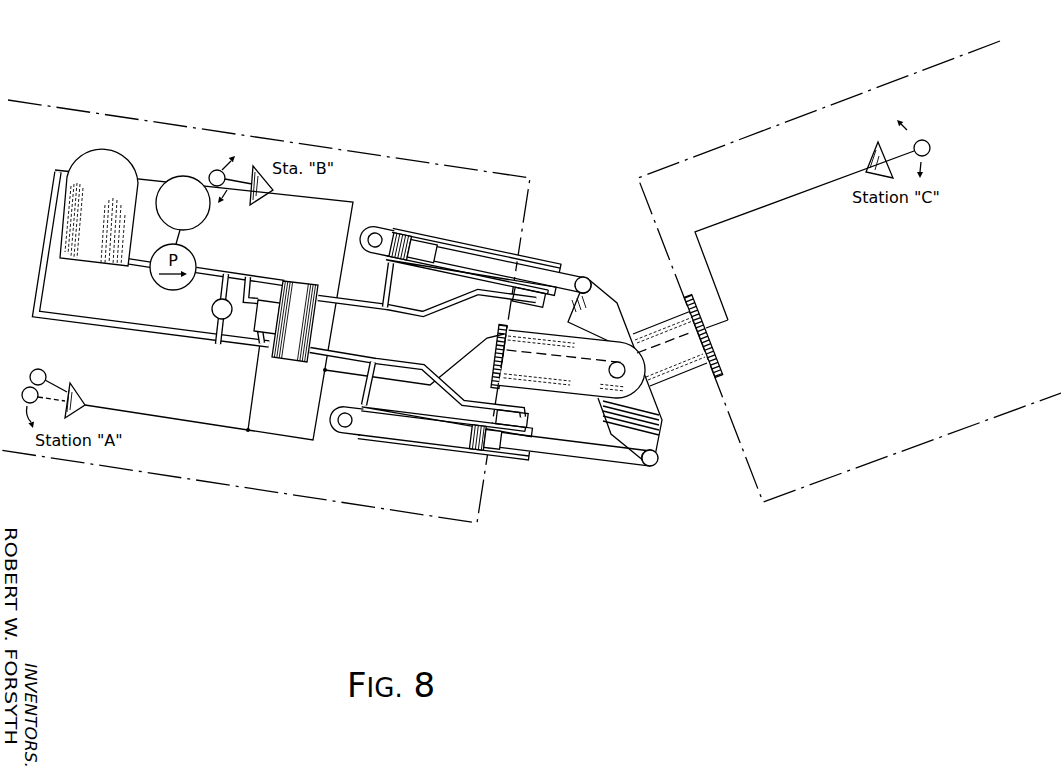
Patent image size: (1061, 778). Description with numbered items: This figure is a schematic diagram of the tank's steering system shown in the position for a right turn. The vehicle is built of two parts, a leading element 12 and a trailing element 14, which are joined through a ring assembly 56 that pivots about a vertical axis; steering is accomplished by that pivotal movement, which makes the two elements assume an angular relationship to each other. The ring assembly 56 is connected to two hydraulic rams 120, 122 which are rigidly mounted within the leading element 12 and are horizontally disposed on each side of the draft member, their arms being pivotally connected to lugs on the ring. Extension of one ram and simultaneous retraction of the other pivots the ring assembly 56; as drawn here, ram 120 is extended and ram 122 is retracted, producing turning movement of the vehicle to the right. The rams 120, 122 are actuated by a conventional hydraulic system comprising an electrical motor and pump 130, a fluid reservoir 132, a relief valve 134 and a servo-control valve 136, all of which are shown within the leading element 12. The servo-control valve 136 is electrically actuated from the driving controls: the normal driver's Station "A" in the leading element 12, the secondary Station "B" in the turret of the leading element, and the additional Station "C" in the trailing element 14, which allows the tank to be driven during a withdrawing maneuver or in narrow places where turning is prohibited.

The leading element 12 is at (464, 163).
The trailing element 14 is at (706, 151).
The ring assembly 56 is at (623, 314).
The hydraulic ram 120 is at (410, 446).
The hydraulic ram 122 is at (462, 243).
The electrical motor and pump 130 is at (182, 177).
The fluid reservoir 132 is at (75, 158).
The relief valve 134 is at (211, 309).
The servo-control valve 136 is at (268, 298).